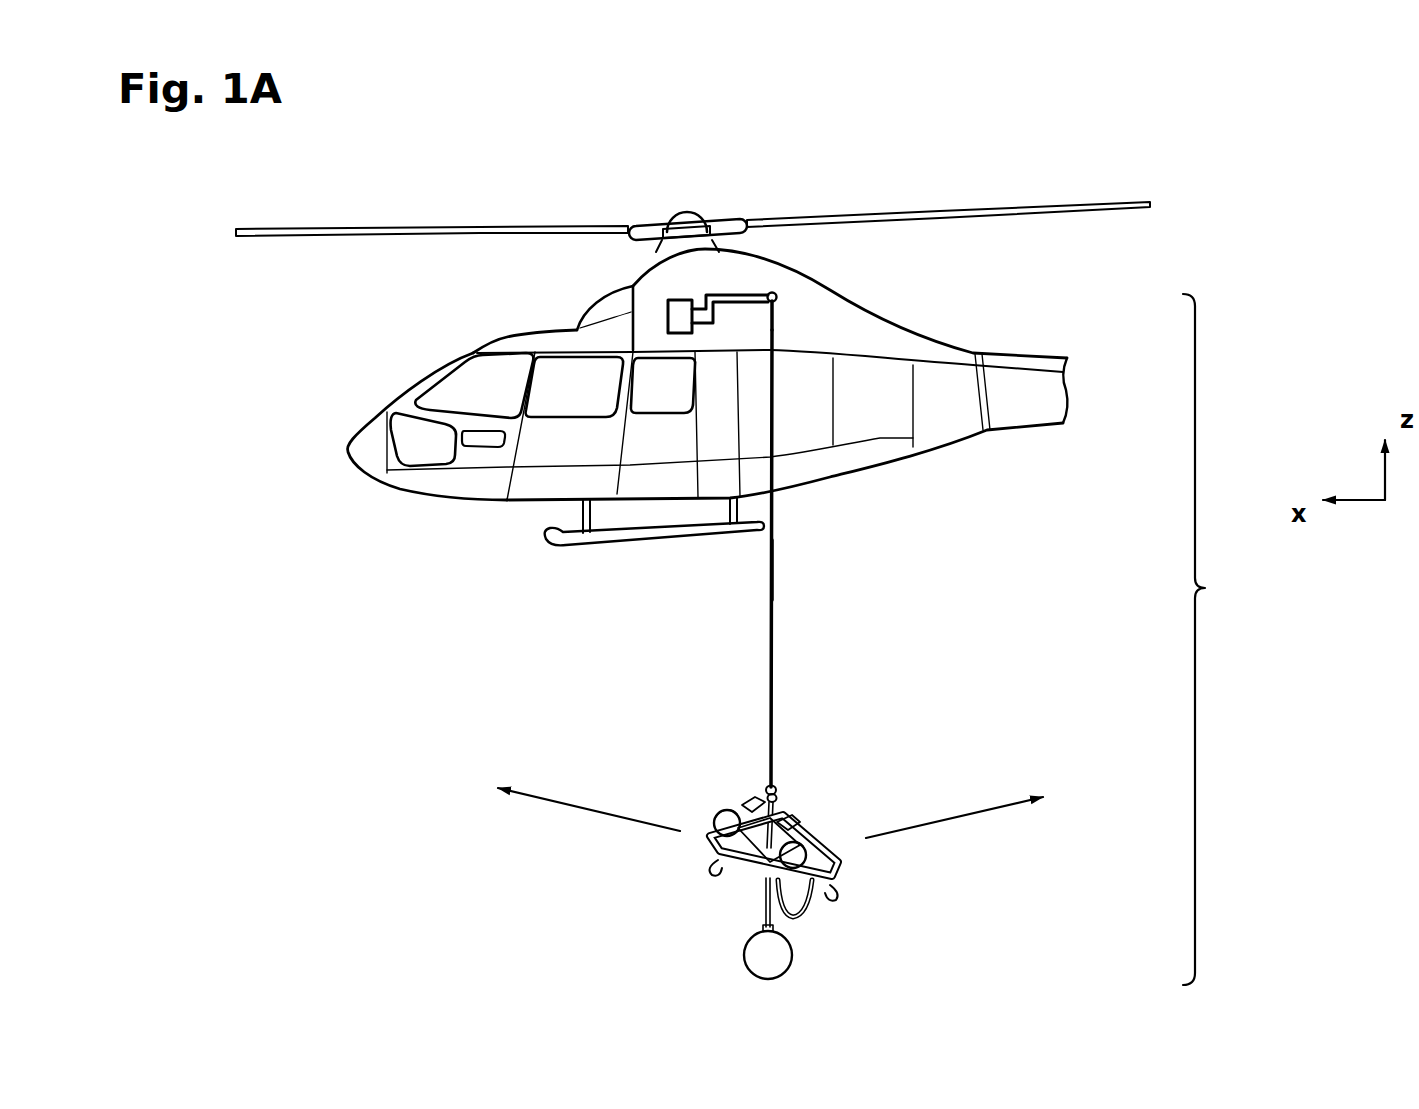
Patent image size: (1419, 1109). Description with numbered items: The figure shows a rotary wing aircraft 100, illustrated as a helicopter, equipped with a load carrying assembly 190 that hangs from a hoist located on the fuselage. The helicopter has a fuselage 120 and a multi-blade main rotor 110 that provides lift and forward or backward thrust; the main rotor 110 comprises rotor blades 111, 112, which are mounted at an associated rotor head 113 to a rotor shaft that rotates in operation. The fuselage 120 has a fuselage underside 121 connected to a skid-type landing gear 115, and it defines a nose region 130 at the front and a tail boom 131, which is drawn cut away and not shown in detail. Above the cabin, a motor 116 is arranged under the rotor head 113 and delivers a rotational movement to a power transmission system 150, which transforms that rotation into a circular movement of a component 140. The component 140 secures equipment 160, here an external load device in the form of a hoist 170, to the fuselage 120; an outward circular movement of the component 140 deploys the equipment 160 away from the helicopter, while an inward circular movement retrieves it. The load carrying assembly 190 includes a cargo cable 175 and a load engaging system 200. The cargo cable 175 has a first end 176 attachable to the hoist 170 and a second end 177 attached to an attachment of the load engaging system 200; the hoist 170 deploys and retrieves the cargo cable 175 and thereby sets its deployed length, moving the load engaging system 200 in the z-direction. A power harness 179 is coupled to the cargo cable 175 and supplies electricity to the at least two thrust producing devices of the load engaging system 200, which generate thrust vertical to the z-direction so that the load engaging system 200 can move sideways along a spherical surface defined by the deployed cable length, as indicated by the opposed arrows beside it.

The rotary wing aircraft 100 is at (428, 148).
The multi-blade main rotor 110 is at (1005, 168).
The rotor blade 111 is at (337, 232).
The rotor blade 112 is at (953, 213).
The rotor head 113 is at (716, 204).
The landing gear 115 is at (647, 537).
The motor 116 is at (681, 316).
The fuselage 120 is at (818, 388).
The fuselage underside 121 is at (552, 503).
The nose region 130 is at (335, 452).
The tail boom 131 is at (1025, 393).
The component 140 is at (750, 278).
The power transmission system 150 is at (682, 279).
The equipment 160 is at (790, 285).
The hoist 170 is at (786, 306).
The cargo cable 175 is at (774, 655).
The first end 176 is at (792, 286).
The second end 177 is at (785, 772).
The power harness 179 is at (786, 563).
The load carrying assembly 190 is at (1221, 639).
The load engaging system 200 is at (714, 797).